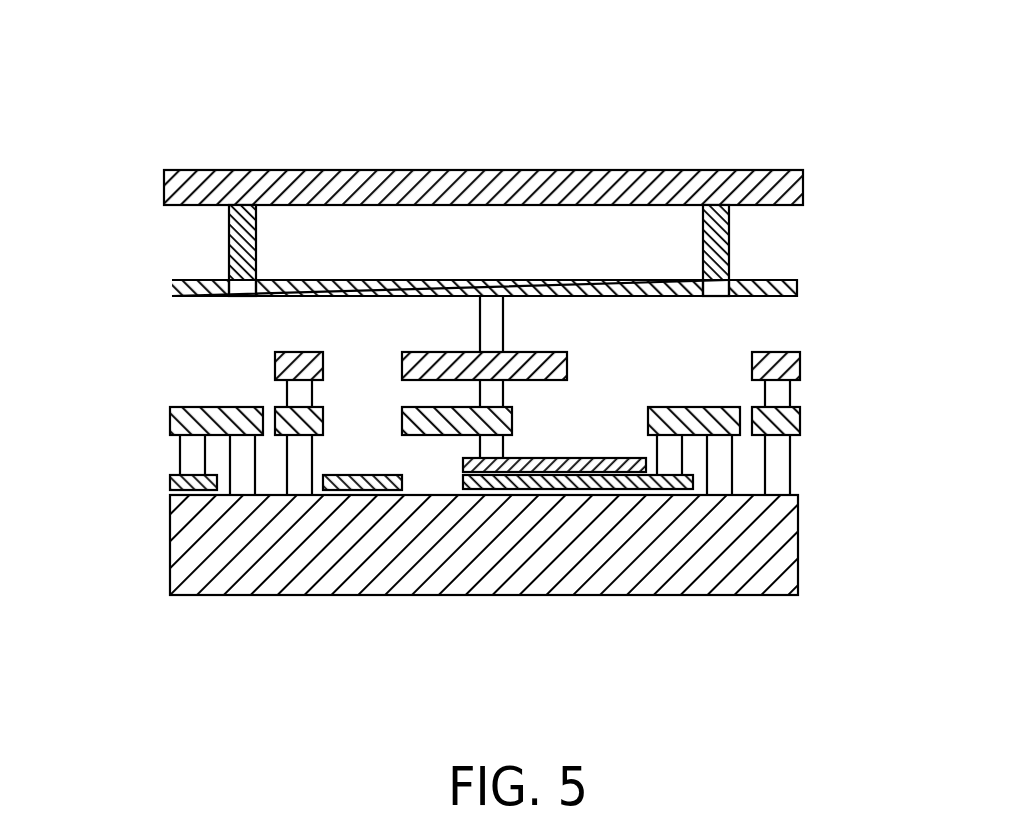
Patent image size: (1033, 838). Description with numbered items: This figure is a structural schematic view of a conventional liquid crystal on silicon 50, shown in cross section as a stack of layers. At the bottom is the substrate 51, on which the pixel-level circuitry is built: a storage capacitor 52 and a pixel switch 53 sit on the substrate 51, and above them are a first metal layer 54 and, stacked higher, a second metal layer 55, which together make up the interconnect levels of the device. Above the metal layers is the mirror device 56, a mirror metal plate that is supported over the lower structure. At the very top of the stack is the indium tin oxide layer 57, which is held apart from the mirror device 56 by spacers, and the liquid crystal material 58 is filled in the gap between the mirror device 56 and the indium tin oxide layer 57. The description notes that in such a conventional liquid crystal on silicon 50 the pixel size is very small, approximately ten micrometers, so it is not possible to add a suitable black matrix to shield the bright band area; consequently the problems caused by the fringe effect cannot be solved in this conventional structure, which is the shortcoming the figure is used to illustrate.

The liquid crystal on silicon 50 is at (176, 126).
The substrate 51 is at (776, 530).
The storage capacitor 52 is at (600, 437).
The pixel switch 53 is at (376, 441).
The first metal layer 54 is at (776, 424).
The second metal layer 55 is at (776, 370).
The mirror device 56 is at (778, 288).
The indium tin oxide layer 57 is at (727, 190).
The liquid crystal material 58 is at (540, 247).